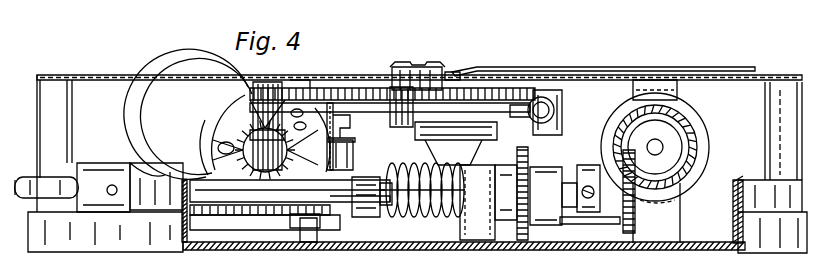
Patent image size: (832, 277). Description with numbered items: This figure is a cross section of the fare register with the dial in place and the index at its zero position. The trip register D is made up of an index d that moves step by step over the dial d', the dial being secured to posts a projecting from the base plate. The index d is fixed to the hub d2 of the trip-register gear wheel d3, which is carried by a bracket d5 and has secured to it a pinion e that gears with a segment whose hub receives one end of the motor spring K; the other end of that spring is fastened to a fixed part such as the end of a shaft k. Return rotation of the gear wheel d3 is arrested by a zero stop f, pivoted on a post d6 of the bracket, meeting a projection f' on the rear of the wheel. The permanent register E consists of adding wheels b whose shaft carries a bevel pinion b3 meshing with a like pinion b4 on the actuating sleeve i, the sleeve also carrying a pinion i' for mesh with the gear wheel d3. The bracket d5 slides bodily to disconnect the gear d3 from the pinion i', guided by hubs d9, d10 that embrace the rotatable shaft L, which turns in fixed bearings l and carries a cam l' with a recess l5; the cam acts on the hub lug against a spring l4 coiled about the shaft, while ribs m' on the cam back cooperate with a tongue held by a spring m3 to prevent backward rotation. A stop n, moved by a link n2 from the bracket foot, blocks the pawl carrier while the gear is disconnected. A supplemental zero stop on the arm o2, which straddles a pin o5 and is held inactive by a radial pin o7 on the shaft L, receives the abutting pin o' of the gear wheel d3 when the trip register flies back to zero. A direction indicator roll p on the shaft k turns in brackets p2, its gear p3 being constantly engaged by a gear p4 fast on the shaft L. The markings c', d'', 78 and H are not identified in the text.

The posts a is at (72, 113).
The dial d' is at (419, 67).
The index d is at (603, 60).
The trip register D is at (400, 72).
The hub d2 is at (452, 72).
The trip-register gear wheel d3 is at (305, 80).
The actuating sleeve i is at (267, 126).
The bevel pinion b4 is at (213, 120).
The pinion i' is at (266, 135).
The adding wheels b is at (205, 143).
The permanent register E is at (195, 147).
The bevel pinion b3 is at (227, 150).
The abutting pin o' is at (295, 118).
The zero stop f is at (345, 136).
The projection f' is at (341, 126).
The pinion e is at (393, 114).
The bracket d5 is at (355, 157).
The bar c' is at (456, 131).
The motor spring K is at (453, 152).
The post d6 is at (555, 116).
The housing d'' is at (547, 118).
The hub d9 is at (366, 197).
The spring m3 is at (425, 222).
The spring l4 is at (395, 222).
The ribs m' is at (477, 202).
The bearings l is at (302, 191).
The block 78 is at (517, 240).
The hub d10 is at (546, 196).
The cam l' is at (572, 193).
The shaft L is at (405, 209).
The radial pin o7 is at (341, 193).
The stop n is at (265, 218).
The pin o5 is at (290, 224).
The arm o2 is at (307, 248).
The link n2 is at (240, 250).
The housing base H is at (700, 251).
The roll p is at (700, 108).
The brackets p2 is at (632, 90).
The gear p3 is at (700, 150).
The shaft k is at (655, 141).
The gear p4 is at (638, 210).
The recess l5 is at (42, 177).